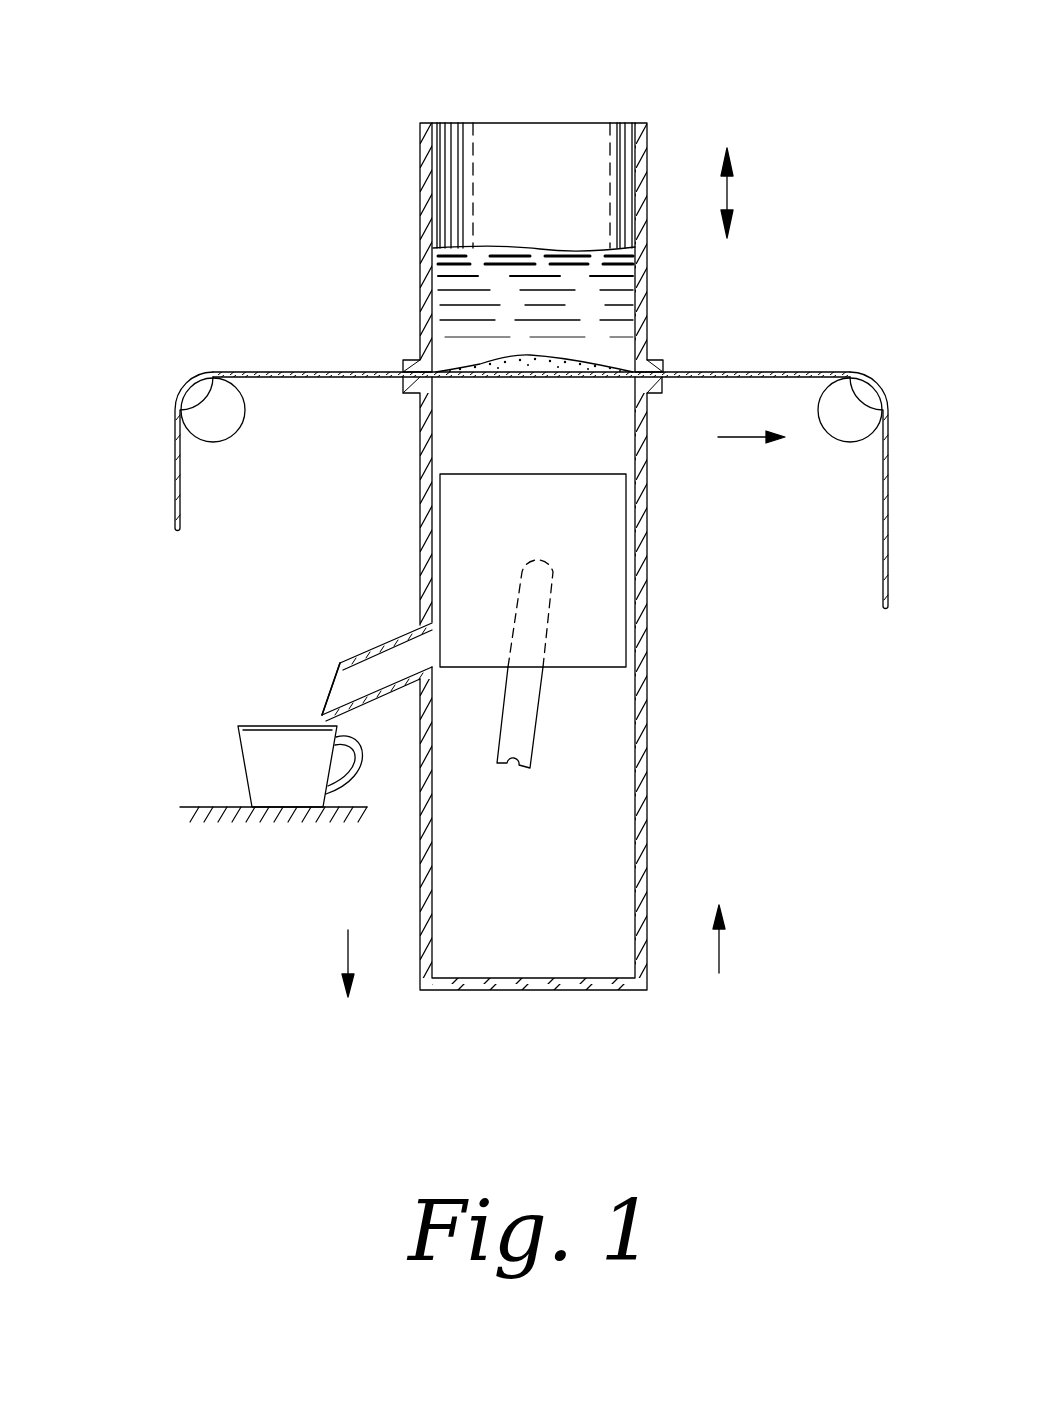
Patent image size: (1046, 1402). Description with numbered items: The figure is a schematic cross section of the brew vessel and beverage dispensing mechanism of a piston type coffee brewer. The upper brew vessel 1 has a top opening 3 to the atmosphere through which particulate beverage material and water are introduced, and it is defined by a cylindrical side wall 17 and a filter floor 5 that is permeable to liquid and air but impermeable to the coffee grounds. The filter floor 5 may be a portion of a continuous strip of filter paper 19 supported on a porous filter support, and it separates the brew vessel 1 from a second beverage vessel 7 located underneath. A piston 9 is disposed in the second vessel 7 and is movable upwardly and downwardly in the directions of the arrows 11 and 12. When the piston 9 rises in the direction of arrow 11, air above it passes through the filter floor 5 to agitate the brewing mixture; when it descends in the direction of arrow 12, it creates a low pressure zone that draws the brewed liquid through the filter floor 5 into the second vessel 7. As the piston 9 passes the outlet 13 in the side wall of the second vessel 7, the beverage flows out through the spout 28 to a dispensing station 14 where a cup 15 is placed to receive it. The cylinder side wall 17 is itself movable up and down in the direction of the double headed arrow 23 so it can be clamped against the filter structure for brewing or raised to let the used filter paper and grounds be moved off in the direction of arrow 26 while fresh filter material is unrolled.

The brew vessel 1 is at (382, 211).
The top opening 3 is at (564, 128).
The filter floor 5 is at (565, 377).
The second beverage vessel 7 is at (647, 853).
The piston 9 is at (598, 637).
The arrow 11 is at (719, 957).
The arrow 12 is at (348, 960).
The outlet 13 is at (425, 648).
The dispensing station 14 is at (275, 708).
The cup 15 is at (240, 768).
The cylindrical side wall 17 is at (647, 302).
The continuous strip of filter paper 19 is at (242, 372).
The double headed arrow 23 is at (727, 193).
The arrow 26 is at (738, 437).
The spout 28 is at (340, 661).